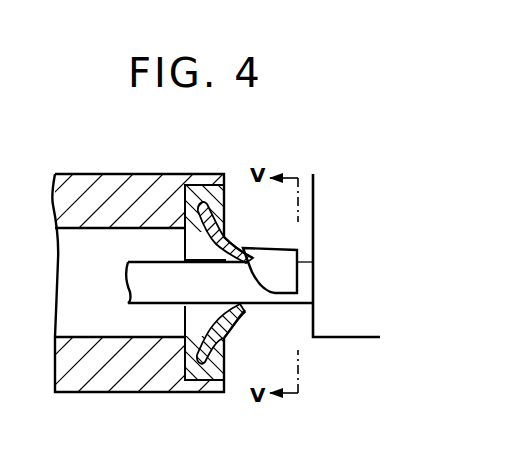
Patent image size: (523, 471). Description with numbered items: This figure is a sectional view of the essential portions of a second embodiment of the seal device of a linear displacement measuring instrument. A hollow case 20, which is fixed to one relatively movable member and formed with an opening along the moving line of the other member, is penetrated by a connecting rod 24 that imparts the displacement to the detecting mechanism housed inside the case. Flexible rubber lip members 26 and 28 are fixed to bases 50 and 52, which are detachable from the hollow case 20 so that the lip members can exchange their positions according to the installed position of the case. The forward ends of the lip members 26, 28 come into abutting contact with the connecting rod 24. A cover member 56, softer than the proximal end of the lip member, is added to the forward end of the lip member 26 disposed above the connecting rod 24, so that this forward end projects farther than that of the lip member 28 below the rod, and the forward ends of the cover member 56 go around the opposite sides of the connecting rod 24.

The hollow case 20 is at (162, 175).
The base 50 is at (230, 195).
The base 52 is at (228, 380).
The lip member 26 is at (232, 238).
The lip member 28 is at (236, 314).
The connecting rod 24 is at (280, 296).
The cover member 56 is at (290, 250).